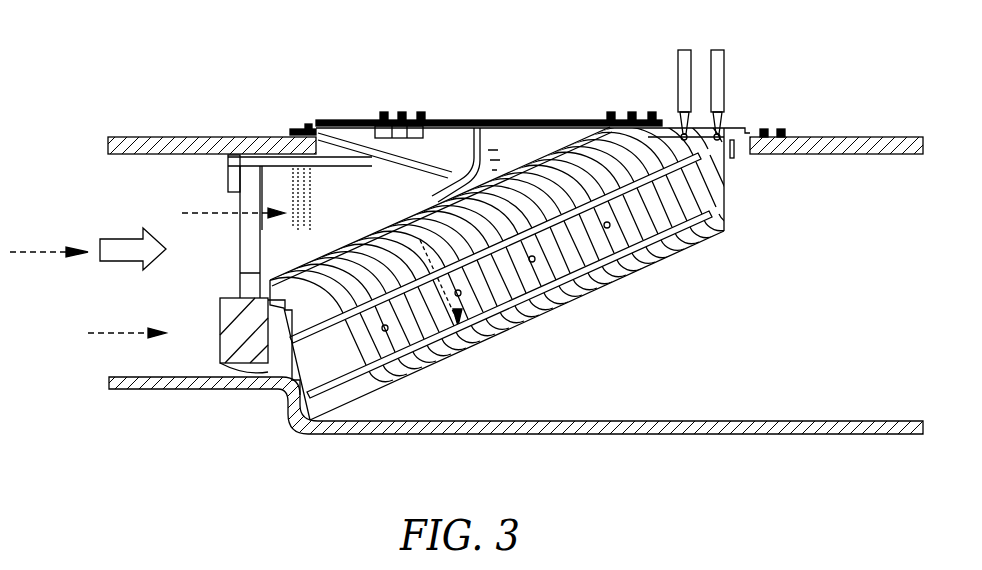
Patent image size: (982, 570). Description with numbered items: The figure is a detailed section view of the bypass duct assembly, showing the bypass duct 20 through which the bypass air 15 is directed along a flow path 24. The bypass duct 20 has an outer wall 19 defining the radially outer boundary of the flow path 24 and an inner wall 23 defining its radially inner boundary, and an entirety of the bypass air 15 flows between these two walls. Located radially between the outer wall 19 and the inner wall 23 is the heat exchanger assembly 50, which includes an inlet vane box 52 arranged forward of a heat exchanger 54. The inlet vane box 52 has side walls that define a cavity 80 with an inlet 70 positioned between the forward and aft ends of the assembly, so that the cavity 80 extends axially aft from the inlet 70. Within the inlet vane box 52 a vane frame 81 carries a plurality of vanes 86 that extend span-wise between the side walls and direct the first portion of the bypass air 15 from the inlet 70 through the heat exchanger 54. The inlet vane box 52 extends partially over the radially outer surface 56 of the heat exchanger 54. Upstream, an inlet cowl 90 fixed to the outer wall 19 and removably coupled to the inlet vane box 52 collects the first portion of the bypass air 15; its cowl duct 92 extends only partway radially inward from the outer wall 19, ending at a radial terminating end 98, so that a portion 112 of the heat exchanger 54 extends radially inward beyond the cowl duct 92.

The outer wall 19 is at (165, 137).
The bypass duct 20 is at (108, 186).
The inlet cowl 90 is at (313, 193).
The cowl duct 92 is at (275, 195).
The inlet 70 is at (430, 182).
The heat exchanger assembly 50 is at (592, 103).
The inlet vane box 52 is at (484, 140).
The cavity 80 is at (519, 146).
The heat exchanger 54 is at (667, 182).
The vane frame 81 is at (382, 257).
The vanes 86 is at (559, 282).
The radial terminating end 98 is at (220, 300).
The radially outer surface 56 is at (290, 343).
The portion of the heat exchanger 112 is at (289, 402).
The inner wall 23 is at (140, 390).
The bypass air 15 is at (22, 254).
The flow path 24 is at (122, 262).